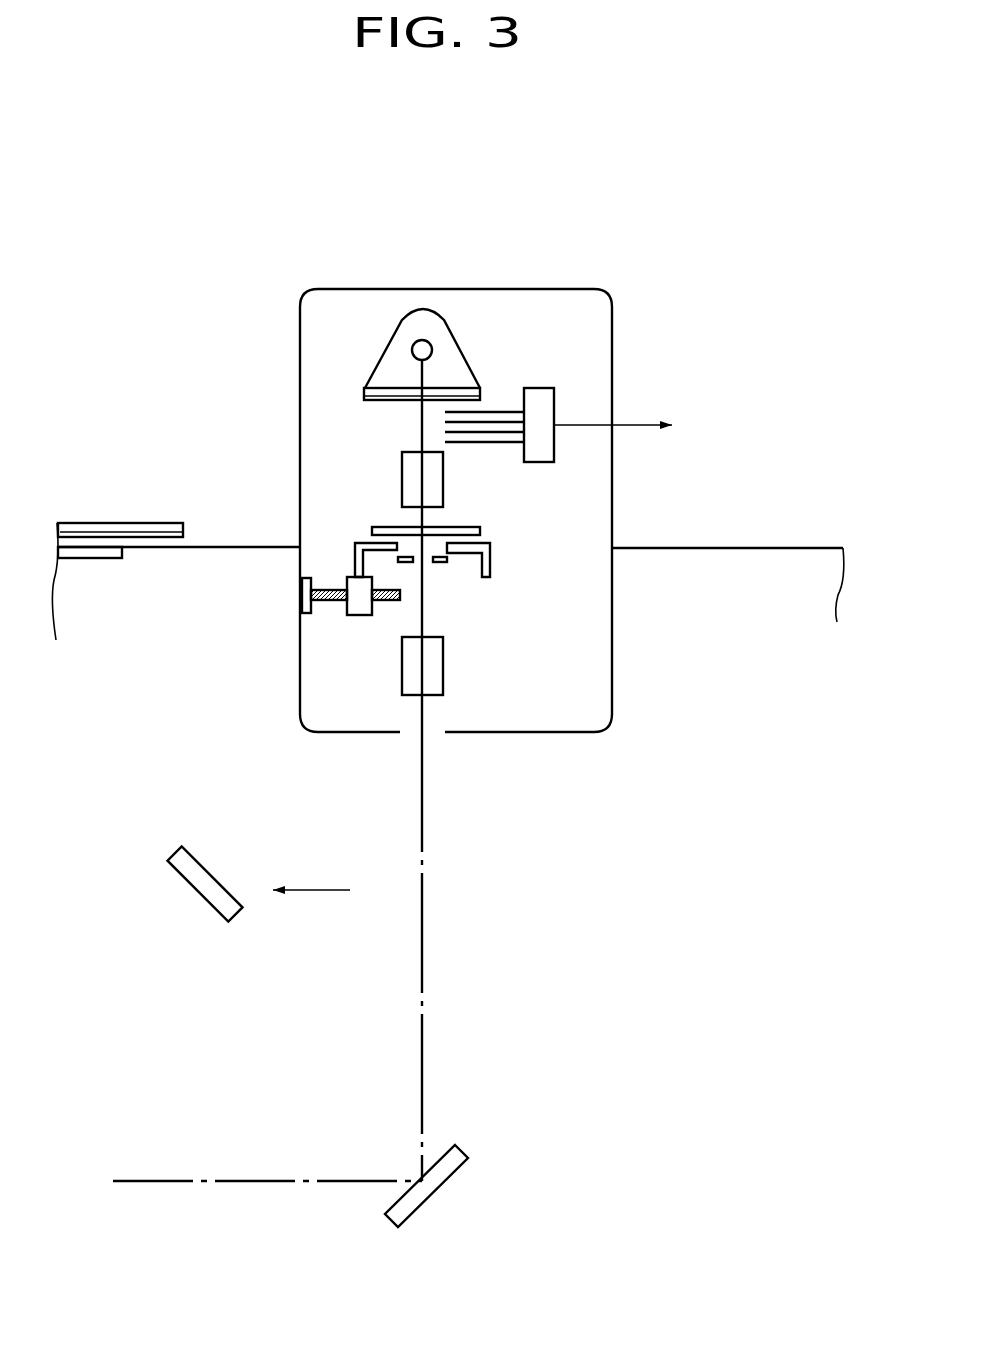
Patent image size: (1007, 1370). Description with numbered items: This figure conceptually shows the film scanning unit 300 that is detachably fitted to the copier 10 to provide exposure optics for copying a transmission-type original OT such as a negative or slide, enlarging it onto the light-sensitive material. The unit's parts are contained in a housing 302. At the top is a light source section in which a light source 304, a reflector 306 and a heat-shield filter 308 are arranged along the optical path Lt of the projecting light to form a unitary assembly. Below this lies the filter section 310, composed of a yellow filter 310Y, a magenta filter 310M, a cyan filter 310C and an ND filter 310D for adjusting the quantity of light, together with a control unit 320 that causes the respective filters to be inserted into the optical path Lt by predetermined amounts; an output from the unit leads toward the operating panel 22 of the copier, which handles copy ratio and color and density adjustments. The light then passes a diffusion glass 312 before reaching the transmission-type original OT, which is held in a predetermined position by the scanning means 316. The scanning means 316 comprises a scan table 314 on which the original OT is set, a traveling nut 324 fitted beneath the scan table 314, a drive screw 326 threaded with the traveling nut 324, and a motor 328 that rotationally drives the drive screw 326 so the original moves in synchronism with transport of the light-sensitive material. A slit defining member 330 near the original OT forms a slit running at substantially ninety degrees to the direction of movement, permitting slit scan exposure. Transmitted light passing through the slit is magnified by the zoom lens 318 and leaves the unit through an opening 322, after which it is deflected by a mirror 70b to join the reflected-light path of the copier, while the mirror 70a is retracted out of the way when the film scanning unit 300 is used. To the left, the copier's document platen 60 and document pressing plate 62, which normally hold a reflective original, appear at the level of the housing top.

The copier 10 is at (818, 542).
The operating panel 22 is at (633, 428).
The document platen 60 is at (92, 560).
The document pressing plate 62 is at (100, 528).
The mirror 70a is at (192, 875).
The mirror 70b is at (445, 1167).
The film scanning unit 300 is at (510, 441).
The housing 302 is at (612, 383).
The light source 304 is at (425, 340).
The reflector 306 is at (400, 318).
The heat-shield filter 308 is at (458, 387).
The filter section 310 is at (461, 400).
The yellow filter 310Y is at (502, 411).
The magenta filter 310M is at (445, 422).
The cyan filter 310C is at (502, 433).
The ND filter 310D is at (490, 442).
The diffusion glass 312 is at (402, 465).
The scan table 314 is at (493, 550).
The scanning means 316 is at (343, 547).
The zoom lens 318 is at (402, 663).
The control unit 320 is at (554, 440).
The opening 322 is at (410, 733).
The traveling nut 324 is at (345, 578).
The drive screw 326 is at (347, 612).
The motor 328 is at (300, 593).
The slit defining member 330 is at (443, 563).
The optical path Lt is at (422, 605).
The transmission-type original OT is at (473, 484).